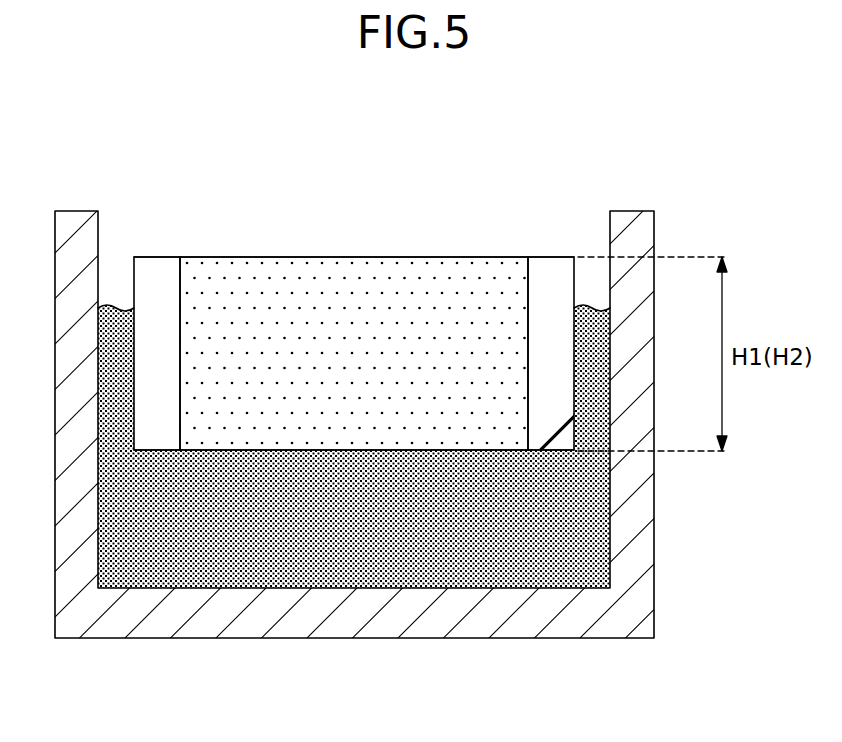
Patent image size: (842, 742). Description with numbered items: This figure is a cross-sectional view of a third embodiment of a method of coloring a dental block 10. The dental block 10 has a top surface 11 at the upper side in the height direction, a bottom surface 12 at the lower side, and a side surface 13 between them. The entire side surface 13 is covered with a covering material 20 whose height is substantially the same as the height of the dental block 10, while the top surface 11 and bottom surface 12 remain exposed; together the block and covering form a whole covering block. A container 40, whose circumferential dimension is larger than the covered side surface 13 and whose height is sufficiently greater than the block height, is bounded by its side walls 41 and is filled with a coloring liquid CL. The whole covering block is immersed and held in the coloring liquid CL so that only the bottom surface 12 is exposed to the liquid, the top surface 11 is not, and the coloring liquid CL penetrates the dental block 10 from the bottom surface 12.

The dental block 10 is at (372, 280).
The top surface 11 is at (291, 257).
The bottom surface 12 is at (352, 450).
The side surface 13 is at (178, 316).
The covering material 20 is at (160, 275).
The container 40 is at (637, 519).
The side wall of container 41 is at (98, 228).
The coloring liquid CL is at (553, 558).